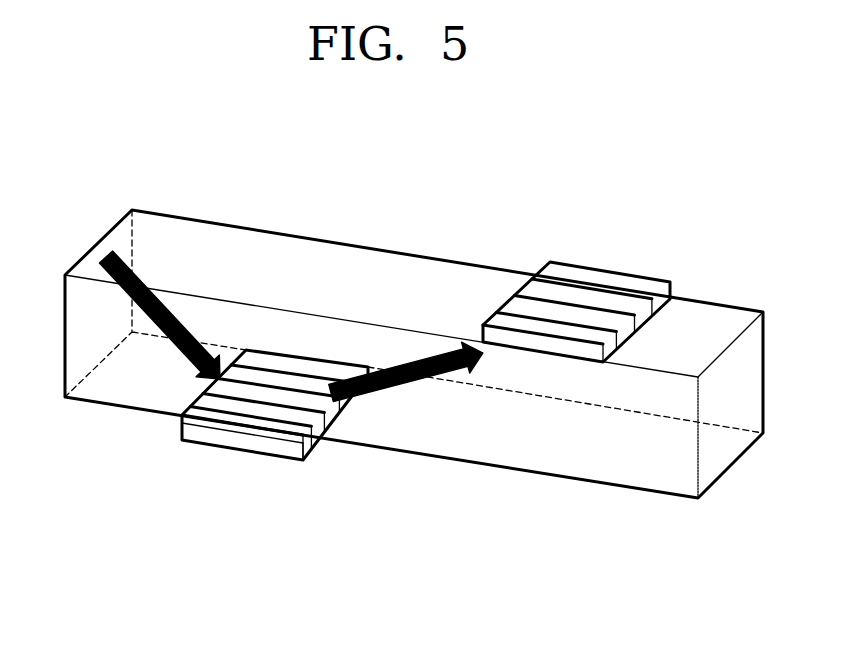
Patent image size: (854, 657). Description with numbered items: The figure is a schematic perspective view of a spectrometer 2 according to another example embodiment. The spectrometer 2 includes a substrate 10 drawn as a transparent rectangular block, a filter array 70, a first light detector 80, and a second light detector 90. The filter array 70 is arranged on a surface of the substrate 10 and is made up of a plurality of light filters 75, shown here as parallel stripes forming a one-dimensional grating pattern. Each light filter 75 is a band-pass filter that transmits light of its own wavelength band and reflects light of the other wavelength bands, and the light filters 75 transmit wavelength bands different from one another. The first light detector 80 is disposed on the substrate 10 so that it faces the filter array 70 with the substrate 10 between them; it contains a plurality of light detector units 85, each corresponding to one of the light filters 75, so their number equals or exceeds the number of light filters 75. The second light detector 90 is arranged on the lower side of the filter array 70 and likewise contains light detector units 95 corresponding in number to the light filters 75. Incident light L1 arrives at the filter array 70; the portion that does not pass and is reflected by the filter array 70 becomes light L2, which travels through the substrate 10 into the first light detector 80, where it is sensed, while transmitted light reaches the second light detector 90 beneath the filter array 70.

The spectrometer 2 is at (721, 231).
The substrate 10 is at (730, 447).
The filter array 70 is at (177, 417).
The light filter 75 is at (183, 424).
The first light detector 80 is at (580, 266).
The light detector unit 85 is at (567, 287).
The second light detector 90 is at (222, 455).
The light detector unit 95 is at (243, 443).
The incident light L1 is at (164, 307).
The reflected light L2 is at (408, 388).